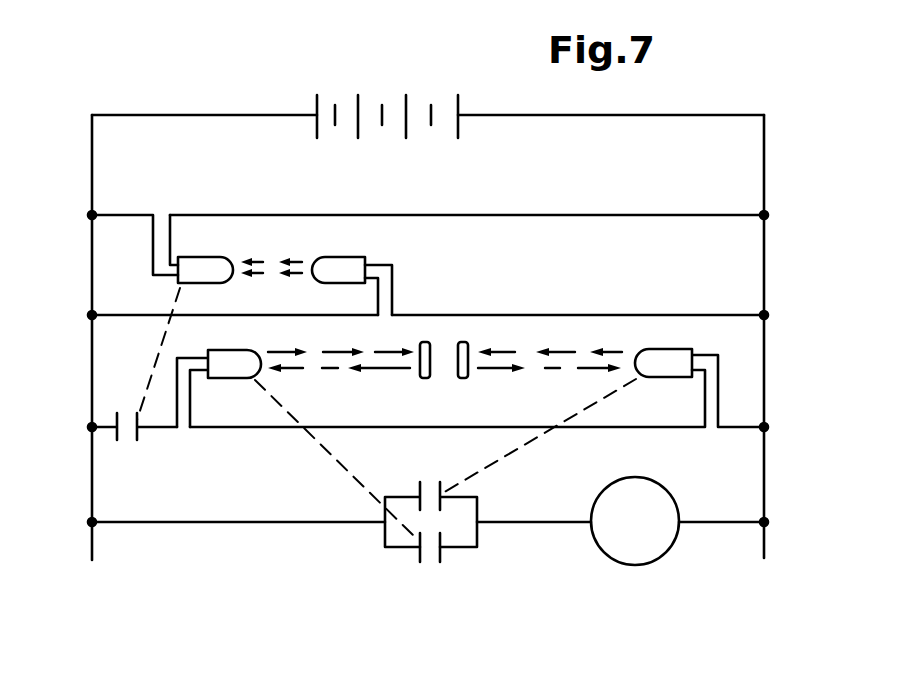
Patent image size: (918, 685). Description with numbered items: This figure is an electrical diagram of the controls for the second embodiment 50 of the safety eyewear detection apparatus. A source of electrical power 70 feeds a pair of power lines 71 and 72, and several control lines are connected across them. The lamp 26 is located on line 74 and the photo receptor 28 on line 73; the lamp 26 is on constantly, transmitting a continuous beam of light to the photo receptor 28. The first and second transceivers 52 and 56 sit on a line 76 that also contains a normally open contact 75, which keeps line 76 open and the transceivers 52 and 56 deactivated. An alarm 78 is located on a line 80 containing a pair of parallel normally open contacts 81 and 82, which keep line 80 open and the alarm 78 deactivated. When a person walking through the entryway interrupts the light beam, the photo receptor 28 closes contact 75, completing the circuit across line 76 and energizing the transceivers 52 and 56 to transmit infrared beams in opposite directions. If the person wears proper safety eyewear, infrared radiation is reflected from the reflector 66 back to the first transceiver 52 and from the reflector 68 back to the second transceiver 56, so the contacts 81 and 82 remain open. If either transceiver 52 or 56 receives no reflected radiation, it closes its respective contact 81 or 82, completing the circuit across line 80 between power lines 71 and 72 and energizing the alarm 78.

The second embodiment 50 is at (127, 86).
The source of electrical power 70 is at (314, 107).
The power line 71 is at (92, 172).
The power line 72 is at (764, 172).
The line 73 is at (561, 213).
The line 74 is at (491, 313).
The photo receptor 28 is at (202, 265).
The lamp 26 is at (348, 265).
The first transceiver 52 is at (235, 368).
The second transceiver 56 is at (668, 368).
The reflector 66 is at (425, 376).
The reflector 68 is at (464, 376).
The normally open contact 75 is at (117, 430).
The line 76 is at (236, 429).
The alarm 78 is at (615, 545).
The line 80 is at (523, 525).
The normally open contact 81 is at (418, 493).
The normally open contact 82 is at (418, 545).